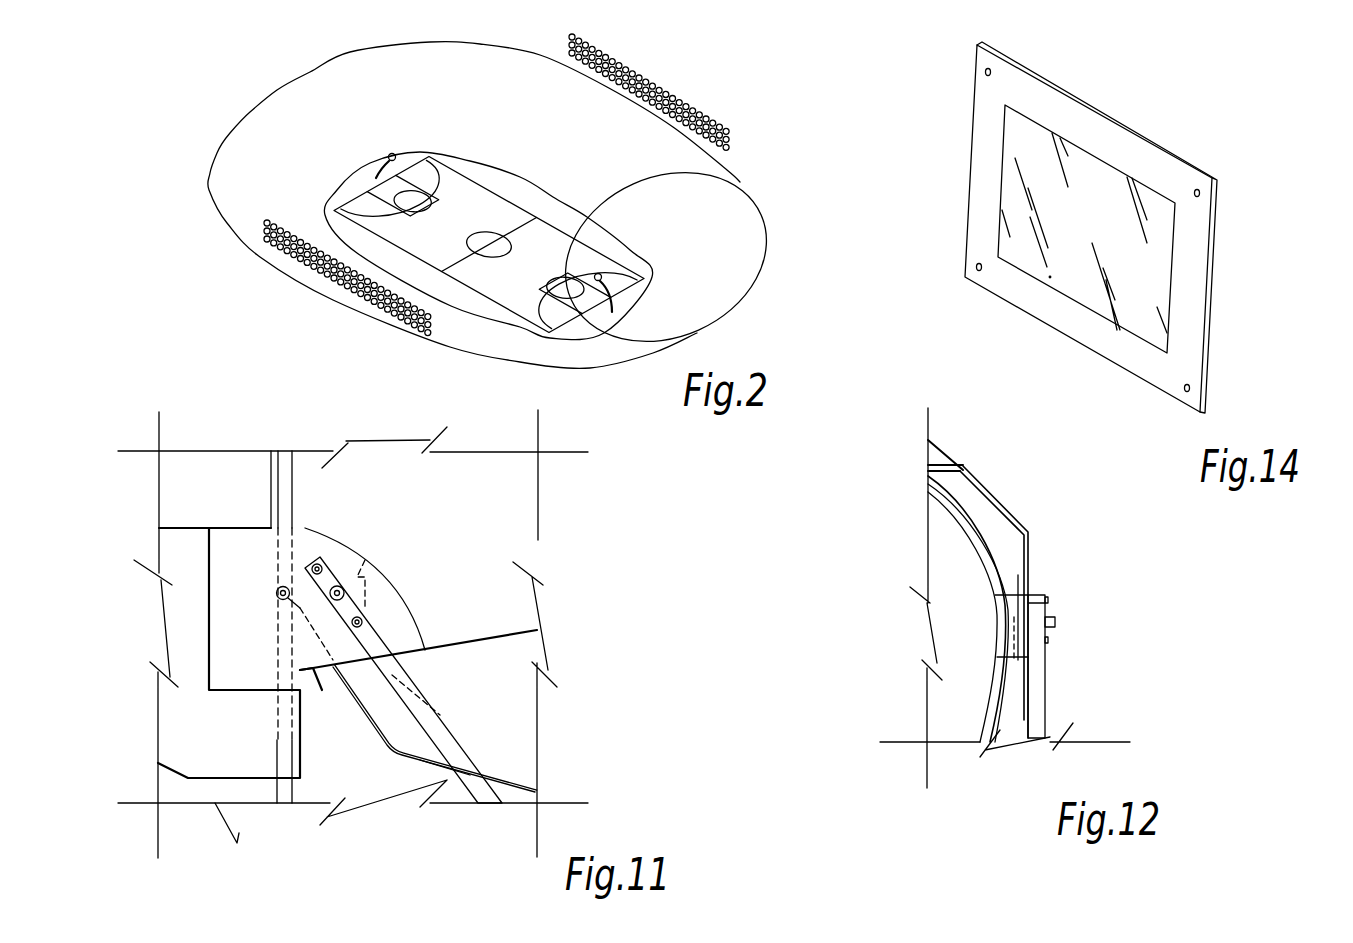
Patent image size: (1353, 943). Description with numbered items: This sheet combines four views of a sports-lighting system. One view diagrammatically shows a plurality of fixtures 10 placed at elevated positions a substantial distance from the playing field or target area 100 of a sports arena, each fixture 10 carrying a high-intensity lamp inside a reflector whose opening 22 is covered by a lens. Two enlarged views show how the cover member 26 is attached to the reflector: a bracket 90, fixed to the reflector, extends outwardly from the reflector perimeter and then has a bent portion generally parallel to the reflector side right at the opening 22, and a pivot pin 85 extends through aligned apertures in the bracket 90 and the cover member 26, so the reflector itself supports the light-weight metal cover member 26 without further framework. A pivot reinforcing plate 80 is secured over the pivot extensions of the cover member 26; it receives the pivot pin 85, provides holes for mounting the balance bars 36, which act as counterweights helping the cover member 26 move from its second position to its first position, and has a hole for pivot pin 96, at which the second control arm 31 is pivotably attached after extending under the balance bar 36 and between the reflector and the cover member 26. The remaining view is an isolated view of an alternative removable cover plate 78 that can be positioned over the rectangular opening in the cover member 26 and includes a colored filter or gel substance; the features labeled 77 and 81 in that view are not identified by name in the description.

In FIG. 2, the fixture 10 is at (677, 95).
In FIG. 2, the target area 100 is at (700, 172).
In FIG. 12, the opening 22 is at (938, 497).
In FIG. 11, the cover member 26 is at (203, 780).
In FIG. 12, the cover member 26 is at (1040, 502).
In FIG. 11, the second control arm 31 is at (497, 775).
In FIG. 11, the balance bars 36 is at (450, 727).
In FIG. 12, the balance bars 36 is at (1042, 692).
In FIG. 14, the transparent panel 77 is at (1110, 194).
In FIG. 14, the removeable cover plate 78 is at (1213, 127).
In FIG. 11, the pivot reinforcing plate 80 is at (230, 580).
In FIG. 14, the frame 81 is at (1197, 257).
In FIG. 11, the pivot pin 85 is at (355, 575).
In FIG. 12, the pivot pin 85 is at (1055, 622).
In FIG. 11, the bracket 90 is at (365, 560).
In FIG. 12, the bracket 90 is at (958, 527).
In FIG. 11, the pivot pin 96 is at (283, 600).